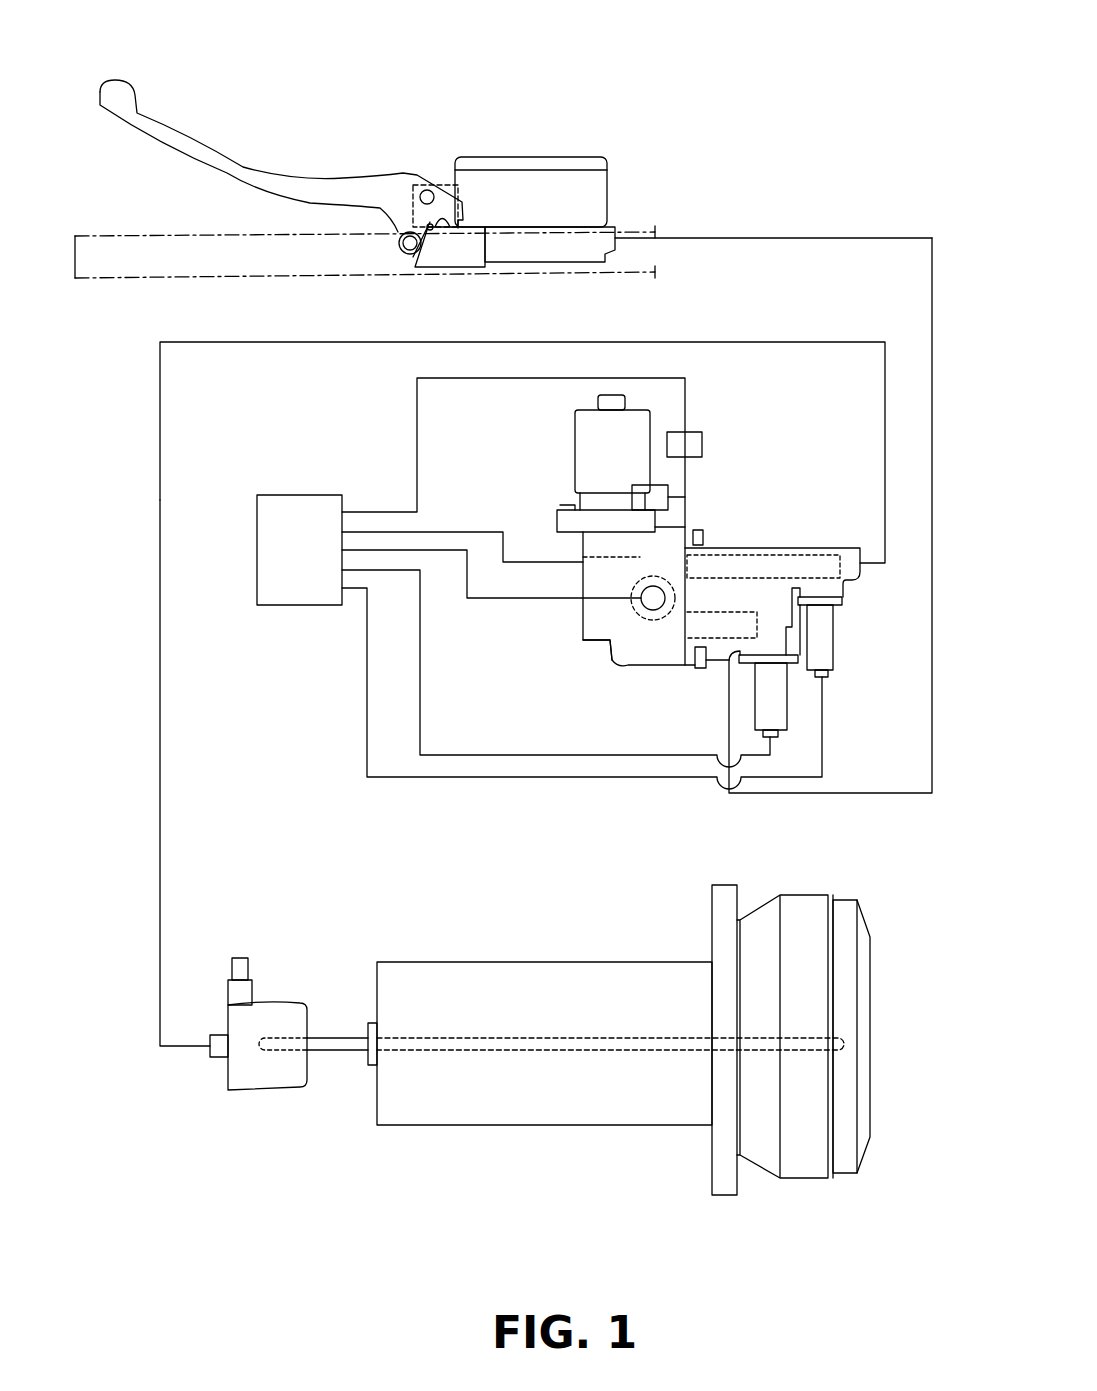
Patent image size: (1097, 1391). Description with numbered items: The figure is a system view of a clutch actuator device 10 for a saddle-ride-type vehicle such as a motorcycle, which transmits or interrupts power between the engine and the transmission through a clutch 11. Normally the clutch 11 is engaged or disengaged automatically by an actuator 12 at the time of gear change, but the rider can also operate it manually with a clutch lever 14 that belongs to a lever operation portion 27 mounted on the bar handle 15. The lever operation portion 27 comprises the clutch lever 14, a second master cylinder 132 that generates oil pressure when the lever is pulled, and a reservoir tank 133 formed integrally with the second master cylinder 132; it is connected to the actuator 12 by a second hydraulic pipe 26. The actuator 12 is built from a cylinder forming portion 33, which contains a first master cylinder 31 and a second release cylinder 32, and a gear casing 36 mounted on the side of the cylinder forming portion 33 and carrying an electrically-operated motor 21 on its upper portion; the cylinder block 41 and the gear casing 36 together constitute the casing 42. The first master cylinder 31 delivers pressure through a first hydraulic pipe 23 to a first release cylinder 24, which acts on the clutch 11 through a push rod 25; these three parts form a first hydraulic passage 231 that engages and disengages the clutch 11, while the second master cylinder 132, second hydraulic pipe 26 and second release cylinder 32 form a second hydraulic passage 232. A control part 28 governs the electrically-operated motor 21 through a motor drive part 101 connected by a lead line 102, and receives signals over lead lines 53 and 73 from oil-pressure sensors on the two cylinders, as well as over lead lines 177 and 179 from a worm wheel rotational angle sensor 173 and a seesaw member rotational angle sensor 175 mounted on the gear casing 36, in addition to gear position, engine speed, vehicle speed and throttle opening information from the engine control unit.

The clutch actuator device 10 is at (738, 110).
The clutch 11 is at (875, 968).
The actuator 12 is at (785, 470).
The clutch lever 14 is at (195, 155).
The bar handle 15 is at (130, 236).
The electrically-operated motor 21 is at (578, 445).
The first hydraulic pipe 23 is at (165, 733).
The first release cylinder 24 is at (278, 1013).
The push rod 25 is at (570, 1037).
The second hydraulic pipe 26 is at (808, 237).
The lever operation portion 27 is at (618, 140).
The control part 28 is at (300, 495).
The first master cylinder 31 is at (758, 552).
The second release cylinder 32 is at (721, 640).
The cylinder forming portion 33 is at (812, 548).
The gear casing 36 is at (668, 660).
The cylinder block 41 is at (845, 582).
The casing 42 is at (845, 603).
The lead line 53 is at (520, 777).
The lead line 73 is at (478, 755).
The motor drive part 101 is at (702, 445).
The lead line 102 is at (417, 405).
The second master cylinder 132 is at (538, 264).
The reservoir tank 133 is at (556, 156).
The worm wheel rotational angle sensor 173 is at (645, 612).
The seesaw member rotational angle sensor 175 is at (648, 621).
The lead line 177 is at (520, 598).
The lead line 179 is at (483, 532).
The first hydraulic passage 231 is at (152, 498).
The second hydraulic passage 232 is at (893, 234).